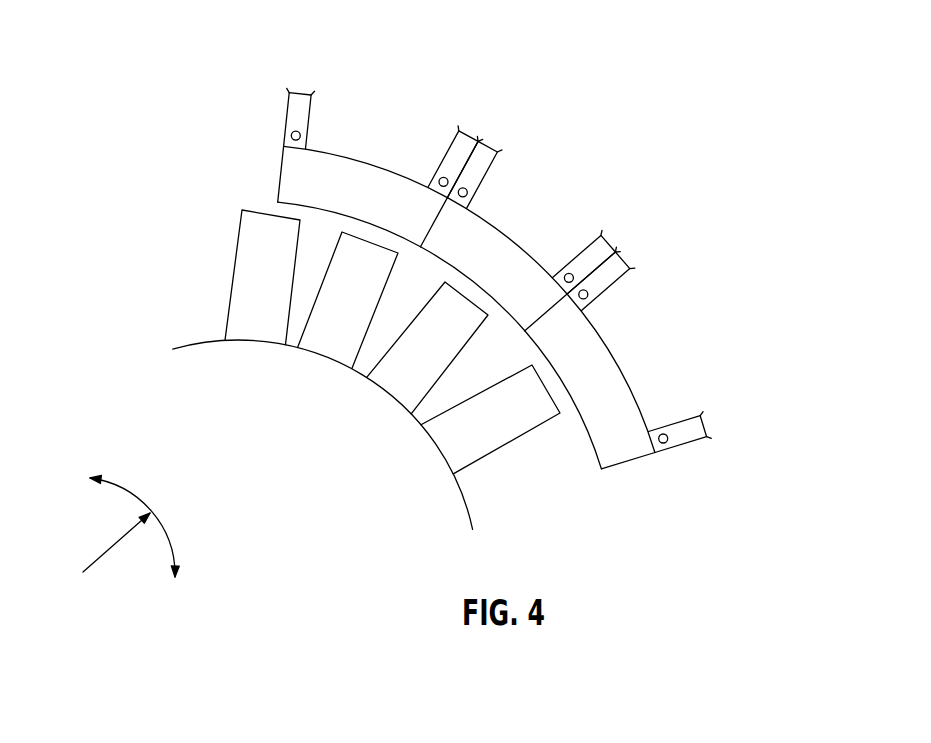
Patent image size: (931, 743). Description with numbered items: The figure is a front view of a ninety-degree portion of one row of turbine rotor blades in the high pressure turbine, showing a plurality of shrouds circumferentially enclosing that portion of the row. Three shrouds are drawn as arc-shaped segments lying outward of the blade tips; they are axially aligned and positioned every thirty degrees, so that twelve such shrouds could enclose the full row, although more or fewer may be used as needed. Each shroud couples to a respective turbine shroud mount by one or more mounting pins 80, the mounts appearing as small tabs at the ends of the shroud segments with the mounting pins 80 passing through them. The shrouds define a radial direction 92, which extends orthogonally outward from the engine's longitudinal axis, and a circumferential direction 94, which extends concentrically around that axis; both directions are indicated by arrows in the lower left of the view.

The mounting pins 80 is at (291, 136).
The radial direction 92 is at (100, 560).
The circumferential direction 94 is at (172, 545).